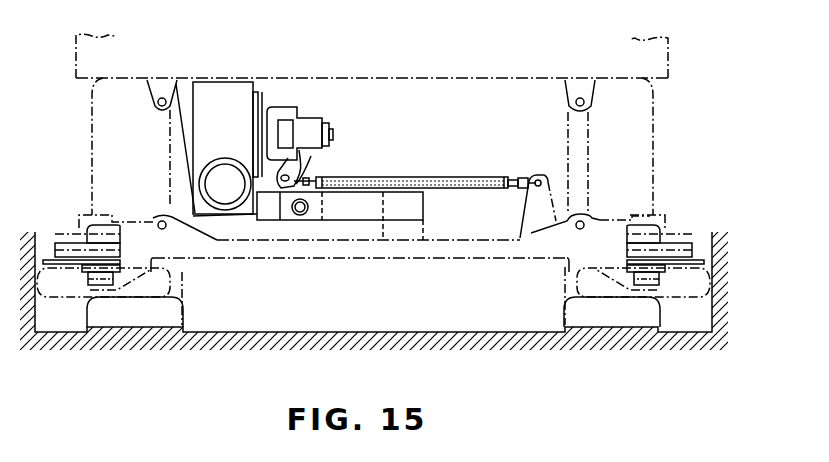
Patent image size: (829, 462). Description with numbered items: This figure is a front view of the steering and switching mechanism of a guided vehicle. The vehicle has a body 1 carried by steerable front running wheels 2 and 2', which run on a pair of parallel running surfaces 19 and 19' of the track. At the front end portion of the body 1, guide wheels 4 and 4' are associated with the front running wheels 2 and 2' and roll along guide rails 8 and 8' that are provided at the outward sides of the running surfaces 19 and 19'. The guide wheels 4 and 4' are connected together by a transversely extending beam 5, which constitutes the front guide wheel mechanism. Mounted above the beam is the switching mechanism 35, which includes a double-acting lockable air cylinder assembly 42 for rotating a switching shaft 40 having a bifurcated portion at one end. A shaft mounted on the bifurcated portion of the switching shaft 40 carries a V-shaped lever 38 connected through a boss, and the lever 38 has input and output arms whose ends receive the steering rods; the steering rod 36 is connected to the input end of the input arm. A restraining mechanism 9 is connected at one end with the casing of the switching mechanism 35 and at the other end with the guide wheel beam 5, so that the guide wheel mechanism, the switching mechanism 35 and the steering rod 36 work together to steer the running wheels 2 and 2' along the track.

The body 1 is at (668, 63).
The front running wheel 2 is at (624, 153).
The front running wheel 2' is at (122, 153).
The guide wheel 4 is at (643, 300).
The guide wheel 4' is at (103, 299).
The beam 5 is at (240, 258).
The guide rail 8 is at (668, 243).
The guide rail 8' is at (74, 243).
The restraining mechanism 9 is at (310, 207).
The running surface 19 is at (612, 338).
The running surface 19' is at (135, 338).
The switching mechanism 35 is at (216, 95).
The steering rod 36 is at (450, 182).
The V-shaped lever 38 is at (307, 158).
The switching shaft 40 is at (286, 107).
The double-acting lockable air cylinder assembly 42 is at (218, 168).